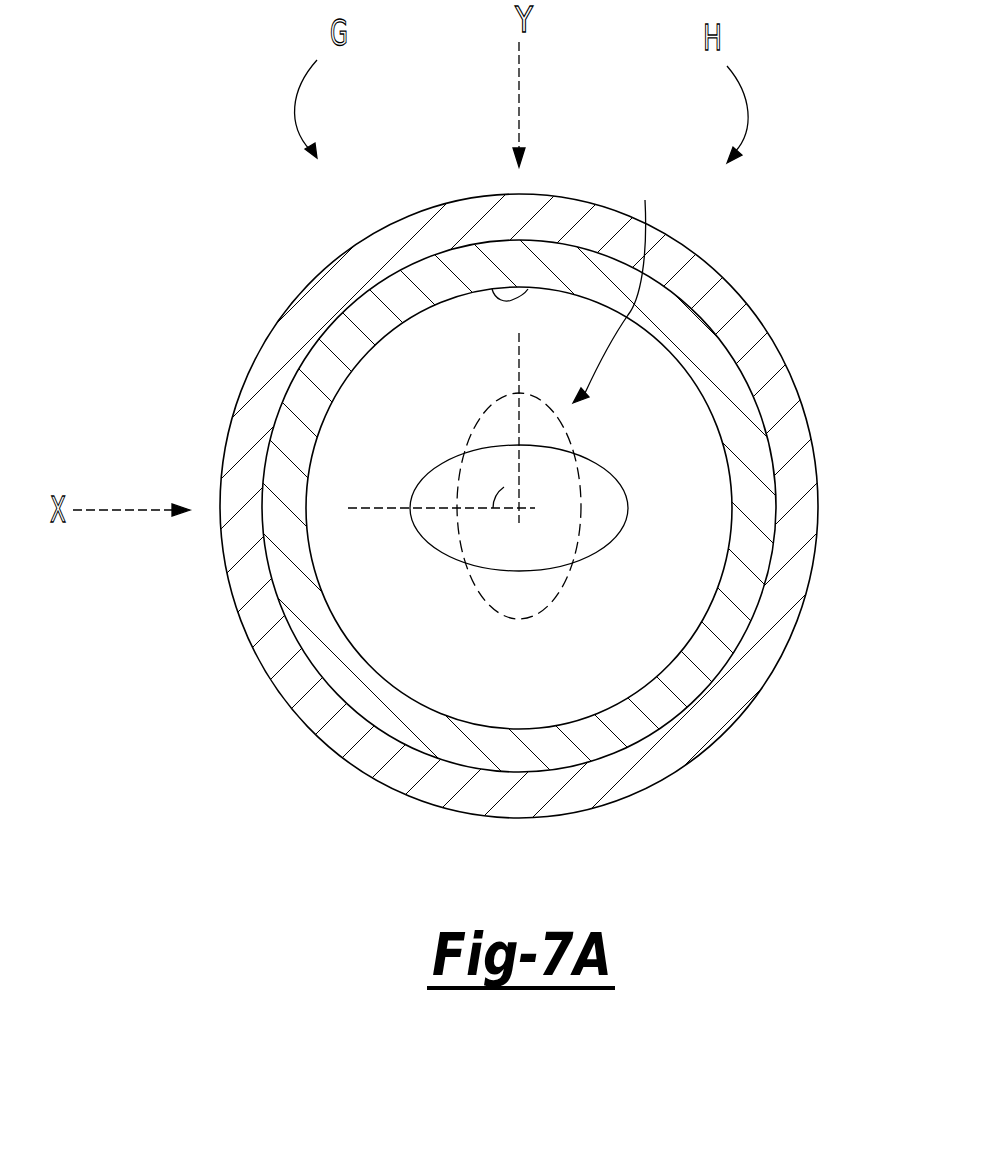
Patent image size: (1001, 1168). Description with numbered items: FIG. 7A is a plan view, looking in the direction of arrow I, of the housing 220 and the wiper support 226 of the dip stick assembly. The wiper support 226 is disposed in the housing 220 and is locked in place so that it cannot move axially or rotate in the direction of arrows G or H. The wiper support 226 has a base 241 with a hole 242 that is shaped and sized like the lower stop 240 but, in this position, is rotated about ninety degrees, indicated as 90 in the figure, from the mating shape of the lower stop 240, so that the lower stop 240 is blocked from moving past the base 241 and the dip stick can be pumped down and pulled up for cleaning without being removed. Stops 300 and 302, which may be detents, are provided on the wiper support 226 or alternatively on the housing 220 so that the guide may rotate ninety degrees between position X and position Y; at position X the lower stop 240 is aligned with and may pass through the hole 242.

The housing 220 is at (306, 323).
The wiper support 226 is at (744, 444).
The lower stop 240 is at (619, 285).
The base 241 is at (592, 630).
The hole 242 is at (642, 532).
The stop 300 is at (312, 506).
The stop 302 is at (508, 297).
The ninety degrees 90 is at (502, 492).